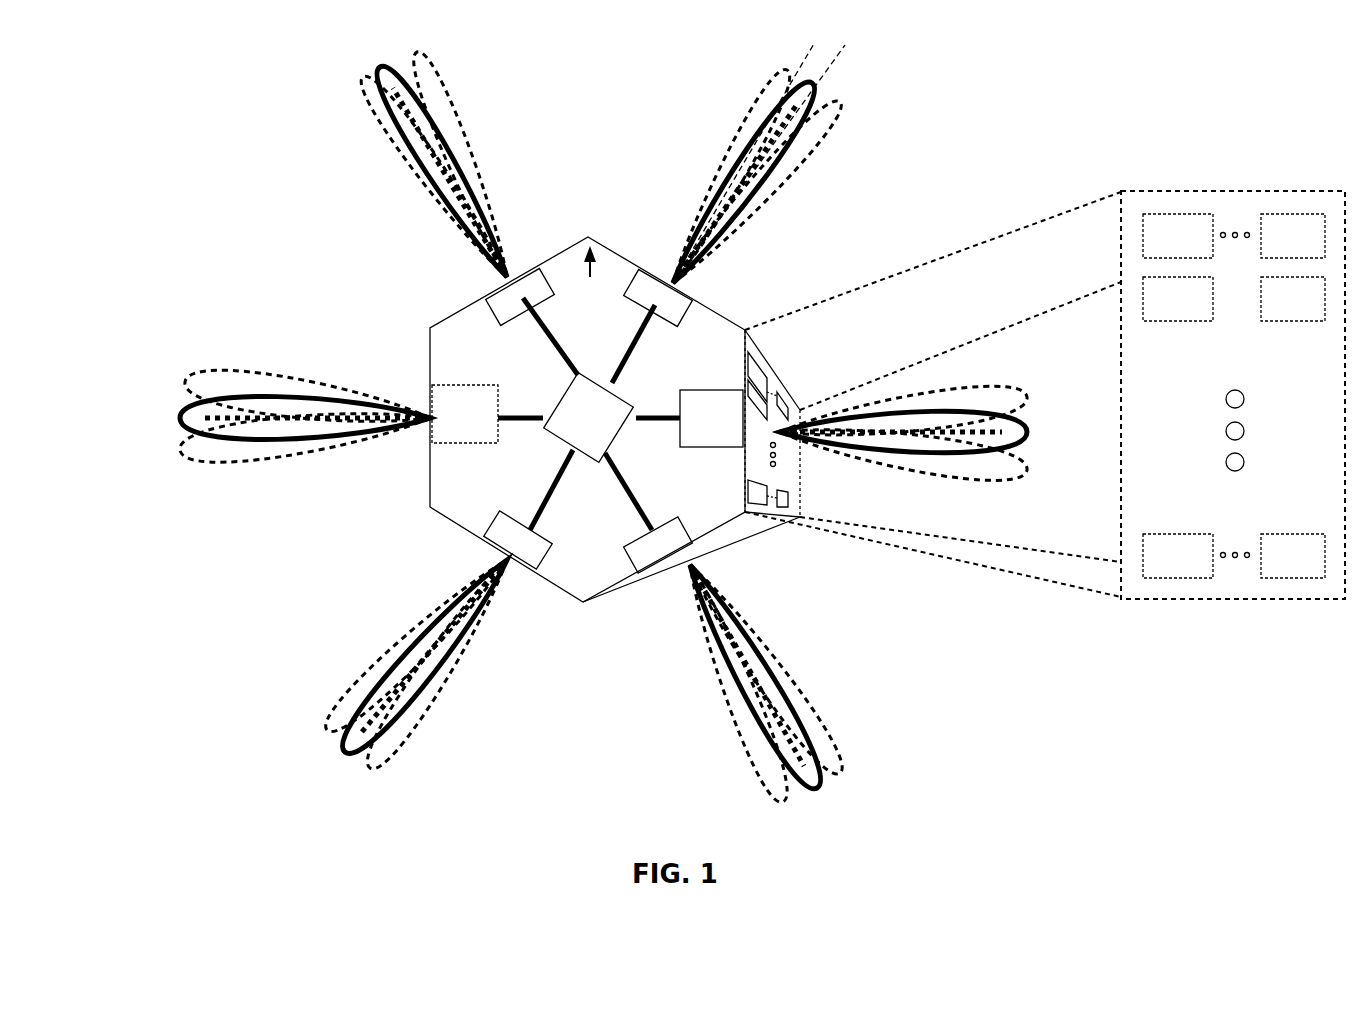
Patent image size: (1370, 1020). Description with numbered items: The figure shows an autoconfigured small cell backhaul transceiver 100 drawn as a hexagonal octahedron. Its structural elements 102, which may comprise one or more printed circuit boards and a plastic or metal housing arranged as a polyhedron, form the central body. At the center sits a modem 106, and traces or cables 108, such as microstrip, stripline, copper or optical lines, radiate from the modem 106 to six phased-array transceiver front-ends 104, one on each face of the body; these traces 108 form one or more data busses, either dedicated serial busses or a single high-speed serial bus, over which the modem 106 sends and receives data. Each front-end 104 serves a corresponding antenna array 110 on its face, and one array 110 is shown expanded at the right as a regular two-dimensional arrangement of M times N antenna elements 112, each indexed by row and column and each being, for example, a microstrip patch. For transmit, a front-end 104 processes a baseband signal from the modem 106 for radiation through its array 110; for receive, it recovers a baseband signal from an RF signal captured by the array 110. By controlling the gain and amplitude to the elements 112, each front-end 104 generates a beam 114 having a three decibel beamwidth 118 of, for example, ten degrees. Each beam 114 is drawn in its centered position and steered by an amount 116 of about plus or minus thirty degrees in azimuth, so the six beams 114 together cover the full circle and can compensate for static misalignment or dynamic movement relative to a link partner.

The small cell backhaul transceiver 100 is at (316, 251).
The structural elements 102 is at (506, 360).
The phased-array transceiver front-end 104 is at (587, 421).
The modem 106 is at (606, 427).
The trace or cable 108 is at (543, 328).
The antenna array 110 is at (462, 309).
The antenna element 112 is at (1205, 245).
The beam 114 is at (395, 50).
The steering amount 116 is at (802, 50).
The 3 dB beamwidth 118 is at (763, 109).